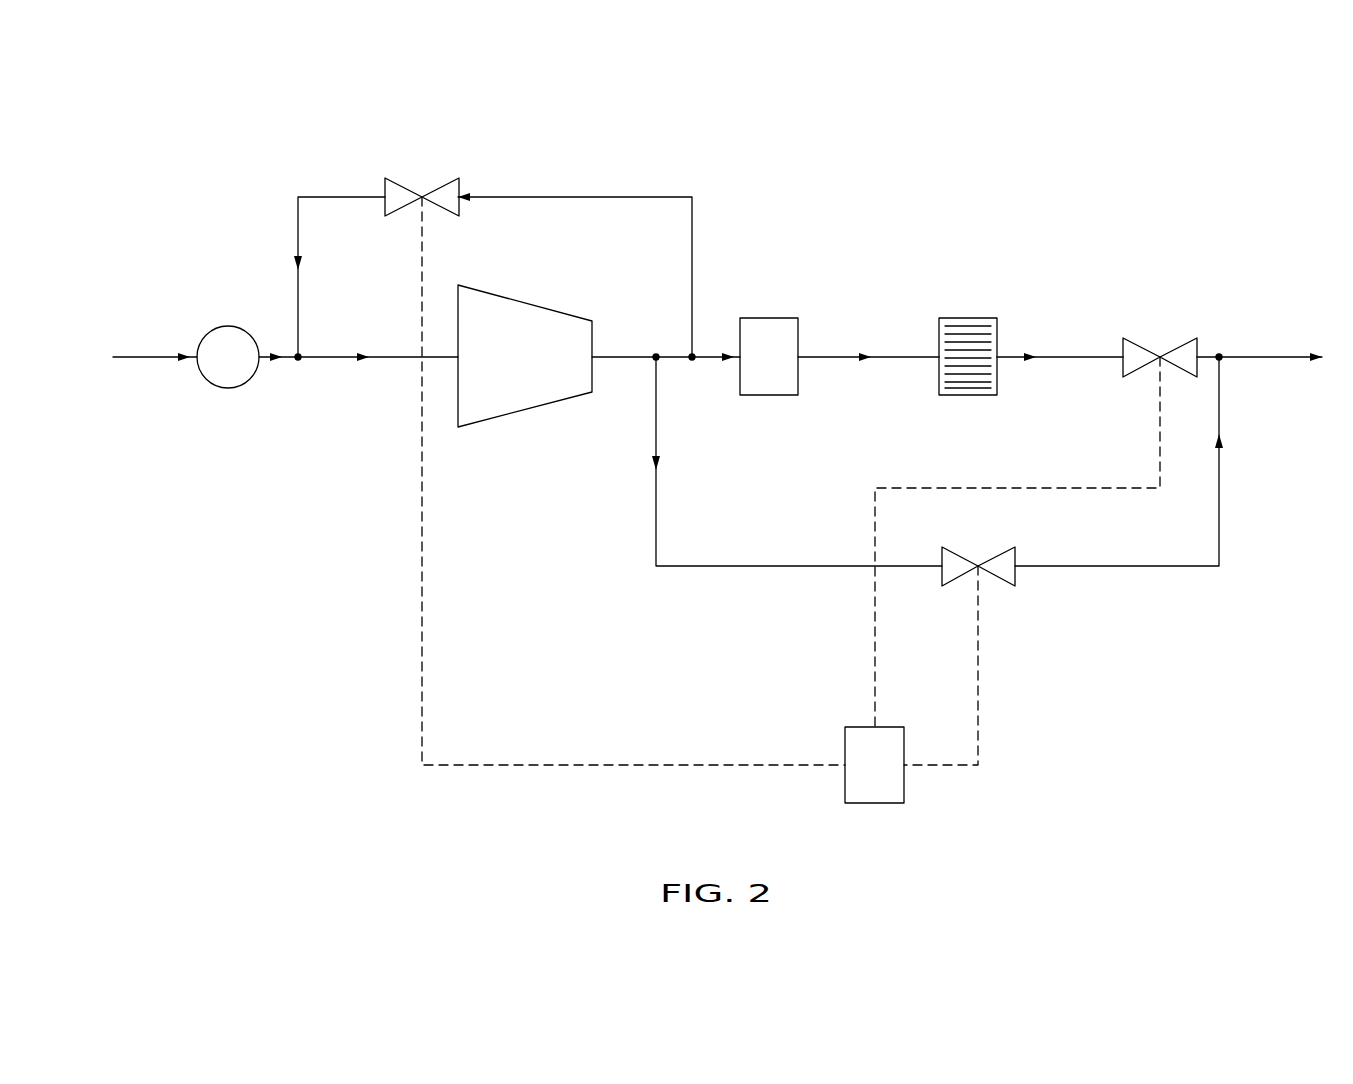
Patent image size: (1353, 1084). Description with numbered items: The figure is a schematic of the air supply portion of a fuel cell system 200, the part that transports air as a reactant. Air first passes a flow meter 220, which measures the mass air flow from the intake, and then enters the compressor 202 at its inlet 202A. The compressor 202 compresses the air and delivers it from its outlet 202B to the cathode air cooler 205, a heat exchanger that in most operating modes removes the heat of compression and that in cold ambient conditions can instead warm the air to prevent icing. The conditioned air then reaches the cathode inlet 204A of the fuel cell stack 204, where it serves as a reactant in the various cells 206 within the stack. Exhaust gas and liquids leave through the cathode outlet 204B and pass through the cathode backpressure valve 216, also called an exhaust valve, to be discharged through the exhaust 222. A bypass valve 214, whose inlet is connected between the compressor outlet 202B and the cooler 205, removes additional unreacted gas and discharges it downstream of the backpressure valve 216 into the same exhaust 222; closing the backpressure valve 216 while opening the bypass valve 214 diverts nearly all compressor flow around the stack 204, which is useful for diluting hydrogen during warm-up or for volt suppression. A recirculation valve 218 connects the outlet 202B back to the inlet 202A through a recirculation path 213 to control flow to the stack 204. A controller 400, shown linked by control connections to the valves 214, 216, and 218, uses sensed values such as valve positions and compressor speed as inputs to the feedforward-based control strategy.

The fuel cell system 200 is at (222, 180).
The flow meter 220 is at (235, 326).
The recirculation path 213 is at (302, 270).
The recirculation valve 218 is at (412, 187).
The inlet 202A is at (363, 351).
The compressor 202 is at (528, 408).
The outlet 202B is at (627, 352).
The cathode air cooler 205 is at (764, 318).
The cathode inlet 204A is at (865, 351).
The fuel cell stack 204 is at (967, 318).
The cells 206 is at (967, 395).
The cathode outlet 204B is at (1030, 351).
The cathode backpressure valve 216 is at (1178, 344).
The exhaust 222 is at (1265, 352).
The bypass valve 214 is at (1012, 583).
The controller 400 is at (904, 787).